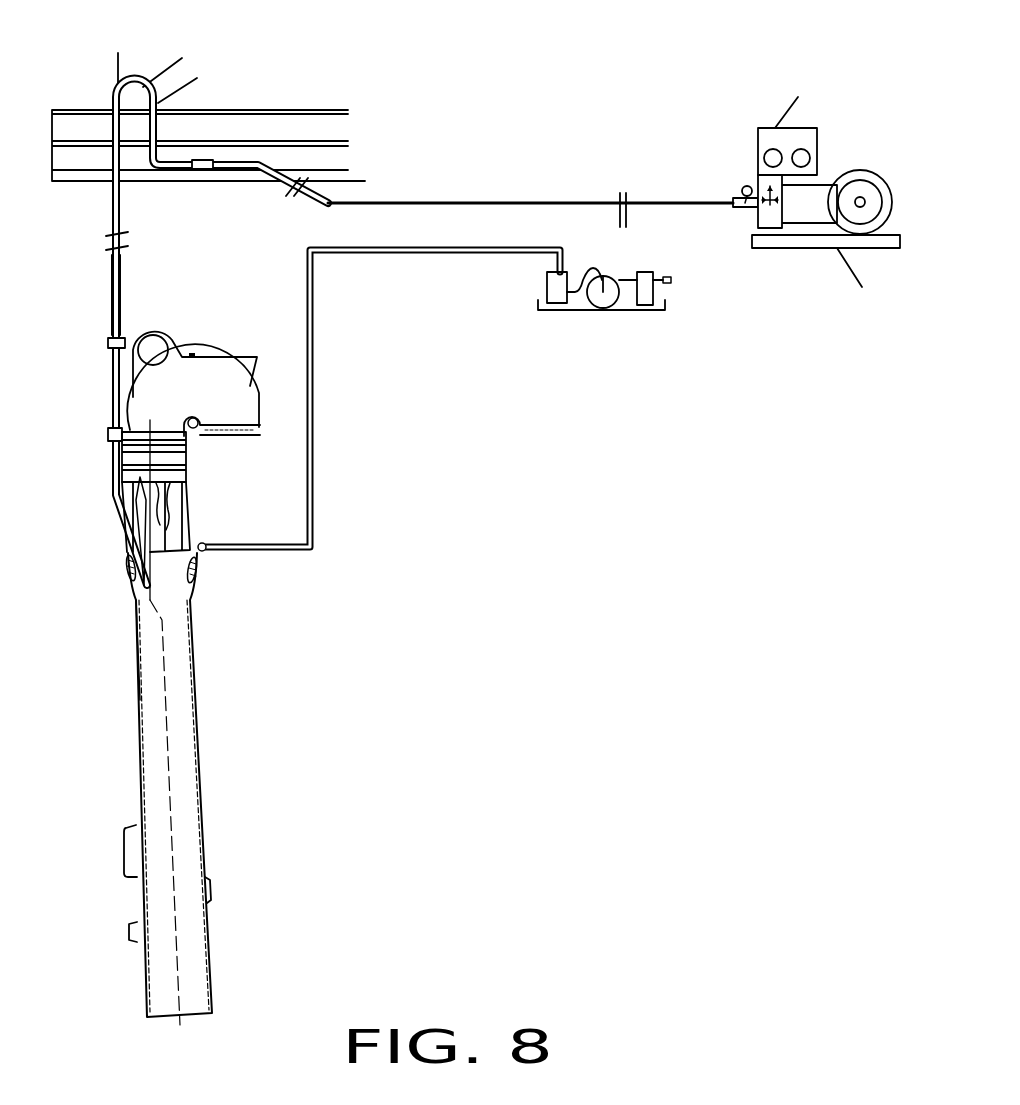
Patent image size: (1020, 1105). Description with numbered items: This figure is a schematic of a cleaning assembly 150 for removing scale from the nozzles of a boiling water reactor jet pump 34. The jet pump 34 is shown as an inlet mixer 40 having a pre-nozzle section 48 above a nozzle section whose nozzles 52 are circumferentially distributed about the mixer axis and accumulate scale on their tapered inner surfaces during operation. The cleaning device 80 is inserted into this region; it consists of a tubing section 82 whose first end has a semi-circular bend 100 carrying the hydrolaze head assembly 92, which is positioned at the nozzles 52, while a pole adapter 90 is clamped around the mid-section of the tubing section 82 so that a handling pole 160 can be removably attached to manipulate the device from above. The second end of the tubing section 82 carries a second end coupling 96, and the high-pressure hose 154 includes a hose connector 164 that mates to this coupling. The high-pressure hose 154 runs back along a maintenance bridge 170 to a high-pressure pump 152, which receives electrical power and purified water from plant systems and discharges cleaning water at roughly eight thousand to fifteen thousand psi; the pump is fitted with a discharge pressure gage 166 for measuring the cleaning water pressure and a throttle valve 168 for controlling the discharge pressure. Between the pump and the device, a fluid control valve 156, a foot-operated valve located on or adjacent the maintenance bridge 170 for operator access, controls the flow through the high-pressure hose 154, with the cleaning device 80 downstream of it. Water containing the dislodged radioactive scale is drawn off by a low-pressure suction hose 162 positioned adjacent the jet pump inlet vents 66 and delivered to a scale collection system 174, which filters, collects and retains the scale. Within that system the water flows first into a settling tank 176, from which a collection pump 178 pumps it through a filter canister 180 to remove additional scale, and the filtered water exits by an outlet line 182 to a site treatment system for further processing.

The jet pump 34 is at (102, 528).
The inlet mixer 40 is at (212, 602).
The pre-nozzle section 48 is at (250, 388).
The nozzle 52 is at (173, 520).
The jet pump inlet vent 66 is at (120, 545).
The cleaning device 80 is at (108, 481).
The tubing section 82 is at (120, 503).
The pole adapter 90 is at (105, 435).
The hydrolaze head assembly 92 is at (155, 498).
The second end coupling 96 is at (105, 343).
The semi-circular bend 100 is at (137, 613).
The cleaning assembly 150 is at (505, 112).
The high-pressure pump 152 is at (823, 183).
The high-pressure hose 154 is at (112, 128).
The fluid control valve 156 is at (203, 160).
The handling pole 160 is at (122, 67).
The suction hose 162 is at (247, 549).
The hose connector 164 is at (127, 330).
The discharge pressure gage 166 is at (748, 186).
The throttle valve 168 is at (762, 207).
The maintenance bridge 170 is at (325, 112).
The scale collection system 174 is at (553, 330).
The settling tank 176 is at (547, 289).
The collection pump 178 is at (603, 300).
The filter canister 180 is at (645, 285).
The outlet line 182 is at (669, 287).